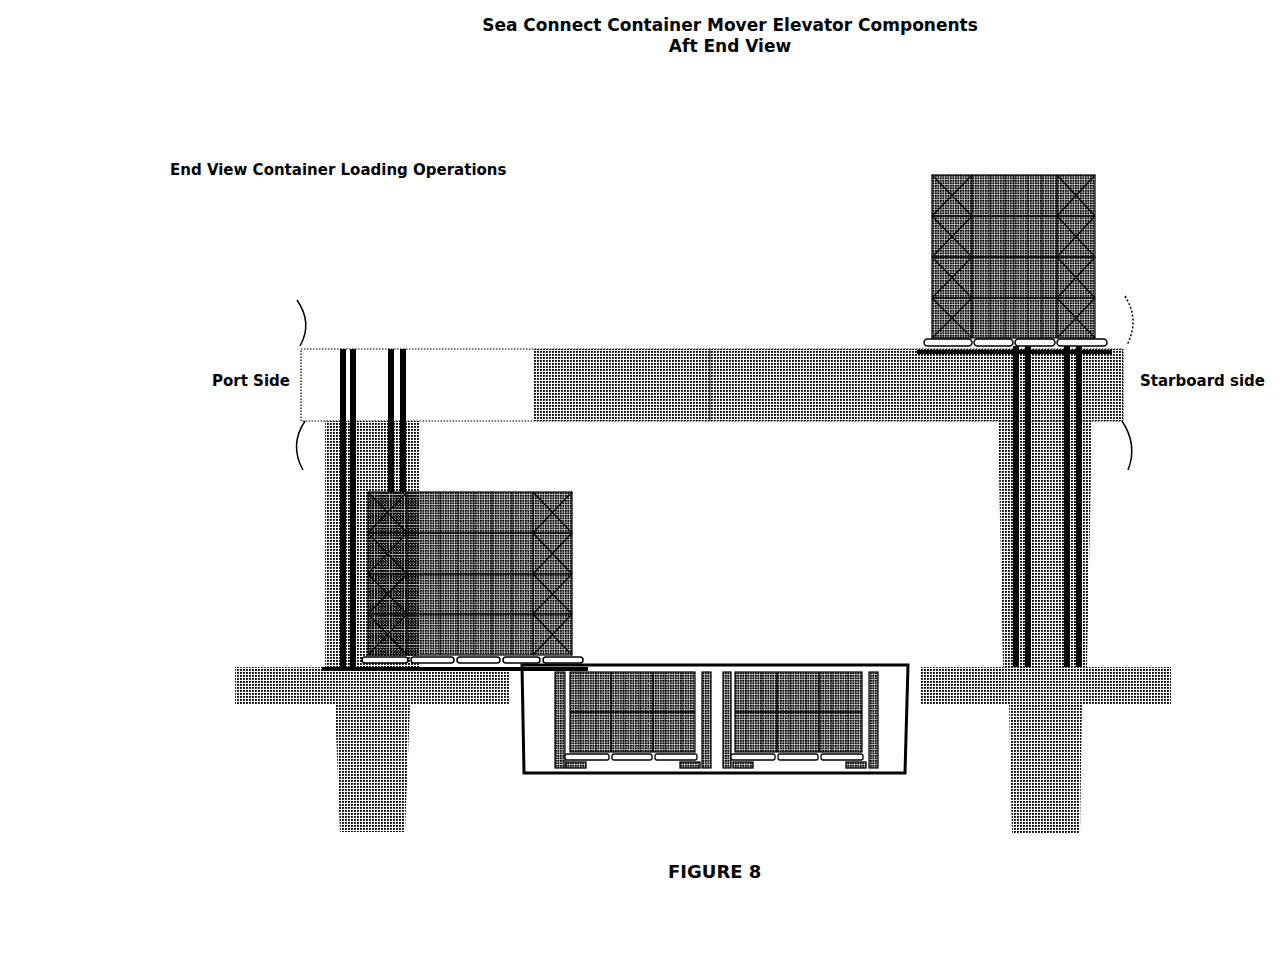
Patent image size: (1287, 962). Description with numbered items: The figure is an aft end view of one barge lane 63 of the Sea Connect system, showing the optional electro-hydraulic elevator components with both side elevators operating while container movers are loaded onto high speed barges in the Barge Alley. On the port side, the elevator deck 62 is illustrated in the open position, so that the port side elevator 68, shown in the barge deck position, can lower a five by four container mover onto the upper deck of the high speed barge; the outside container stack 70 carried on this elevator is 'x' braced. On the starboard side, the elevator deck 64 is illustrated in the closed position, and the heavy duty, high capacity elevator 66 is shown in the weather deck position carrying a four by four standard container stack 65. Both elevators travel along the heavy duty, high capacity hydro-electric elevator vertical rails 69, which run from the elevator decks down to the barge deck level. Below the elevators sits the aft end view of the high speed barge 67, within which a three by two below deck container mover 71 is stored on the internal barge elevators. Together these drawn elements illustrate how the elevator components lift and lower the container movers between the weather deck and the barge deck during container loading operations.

The elevator deck 62 is at (378, 365).
The aft end view of one barge lane 63 is at (550, 365).
The elevator deck 64 is at (897, 365).
The four by four standard container stack 65 is at (1018, 278).
The heavy duty, high capacity elevator 66 is at (946, 352).
The aft end view of the high speed barge 67 is at (905, 775).
The port side elevator 68 is at (440, 672).
The hydro-electric elevator vertical rails 69 is at (342, 542).
The 'x' braced outside container stack 70 is at (540, 598).
The three by two below deck container mover 71 is at (800, 695).